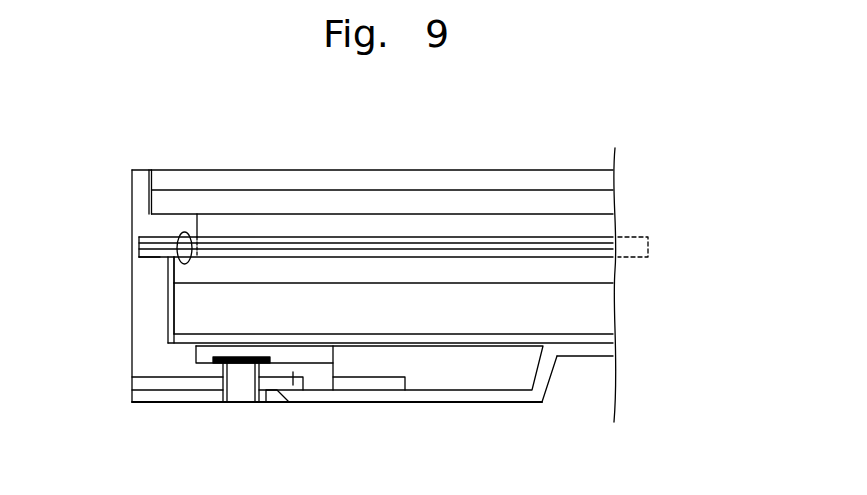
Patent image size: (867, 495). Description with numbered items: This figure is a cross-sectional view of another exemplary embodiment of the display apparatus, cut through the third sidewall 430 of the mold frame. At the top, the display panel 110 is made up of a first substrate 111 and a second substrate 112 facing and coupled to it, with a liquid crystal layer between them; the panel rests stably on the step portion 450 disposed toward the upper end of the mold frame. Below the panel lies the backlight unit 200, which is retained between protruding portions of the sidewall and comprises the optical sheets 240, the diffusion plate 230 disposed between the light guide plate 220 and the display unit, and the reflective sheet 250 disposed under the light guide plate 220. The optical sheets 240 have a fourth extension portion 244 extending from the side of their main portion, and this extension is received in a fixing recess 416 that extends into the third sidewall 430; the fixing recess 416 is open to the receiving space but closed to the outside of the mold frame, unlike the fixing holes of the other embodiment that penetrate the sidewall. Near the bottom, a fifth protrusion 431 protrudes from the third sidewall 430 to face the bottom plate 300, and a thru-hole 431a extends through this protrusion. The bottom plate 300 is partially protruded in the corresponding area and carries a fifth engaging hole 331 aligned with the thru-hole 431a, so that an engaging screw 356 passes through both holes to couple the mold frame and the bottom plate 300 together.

The display panel 110 is at (696, 168).
The first substrate 111 is at (610, 197).
The second substrate 112 is at (610, 176).
The backlight unit 200 is at (697, 238).
The optical sheets 240 is at (650, 237).
The fourth extension portion 244 is at (189, 262).
The diffusion plate 230 is at (610, 268).
The light guide plate 220 is at (610, 300).
The reflective sheet 250 is at (610, 337).
The step portion 450 is at (158, 214).
The fixing recess 416 is at (151, 260).
The third sidewall 430 is at (142, 318).
The fifth protrusion 431 is at (281, 377).
The thru-hole 431a is at (218, 372).
The fifth engaging hole 331 is at (224, 392).
The engaging screw 356 is at (244, 390).
The bottom plate 300 is at (387, 396).